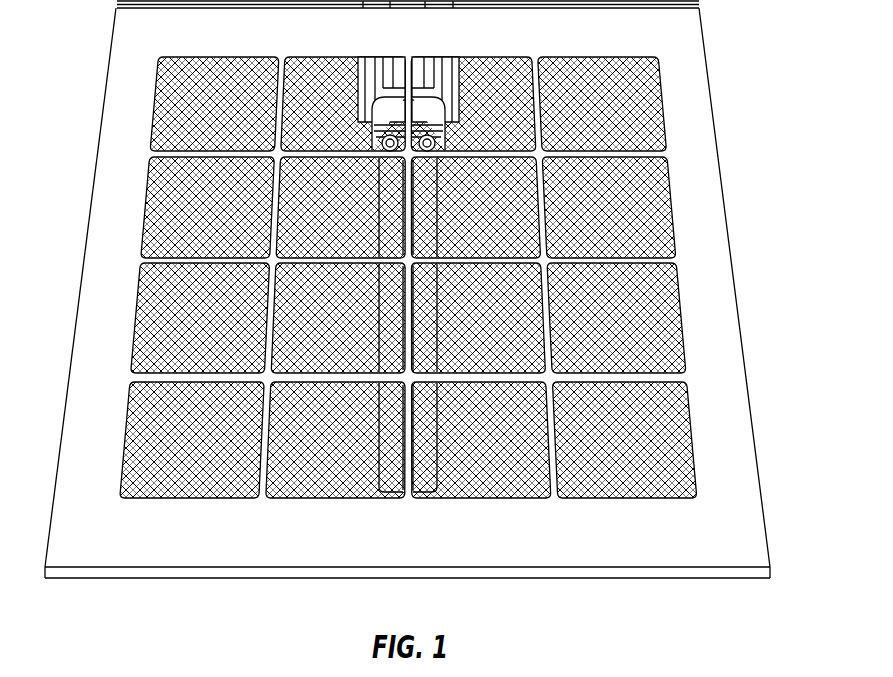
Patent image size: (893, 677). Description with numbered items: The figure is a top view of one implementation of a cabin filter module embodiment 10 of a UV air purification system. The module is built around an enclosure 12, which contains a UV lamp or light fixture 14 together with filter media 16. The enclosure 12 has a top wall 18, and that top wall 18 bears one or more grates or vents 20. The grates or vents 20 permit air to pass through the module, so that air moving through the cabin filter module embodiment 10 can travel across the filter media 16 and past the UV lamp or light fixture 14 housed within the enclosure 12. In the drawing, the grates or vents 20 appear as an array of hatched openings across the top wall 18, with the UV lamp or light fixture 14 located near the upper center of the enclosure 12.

The cabin filter module embodiment 10 is at (397, 289).
The enclosure 12 is at (110, 207).
The UV lamp or light fixture 14 is at (382, 112).
The filter media 16 is at (637, 210).
The top wall 18 is at (93, 326).
The grates or vents 20 is at (632, 104).